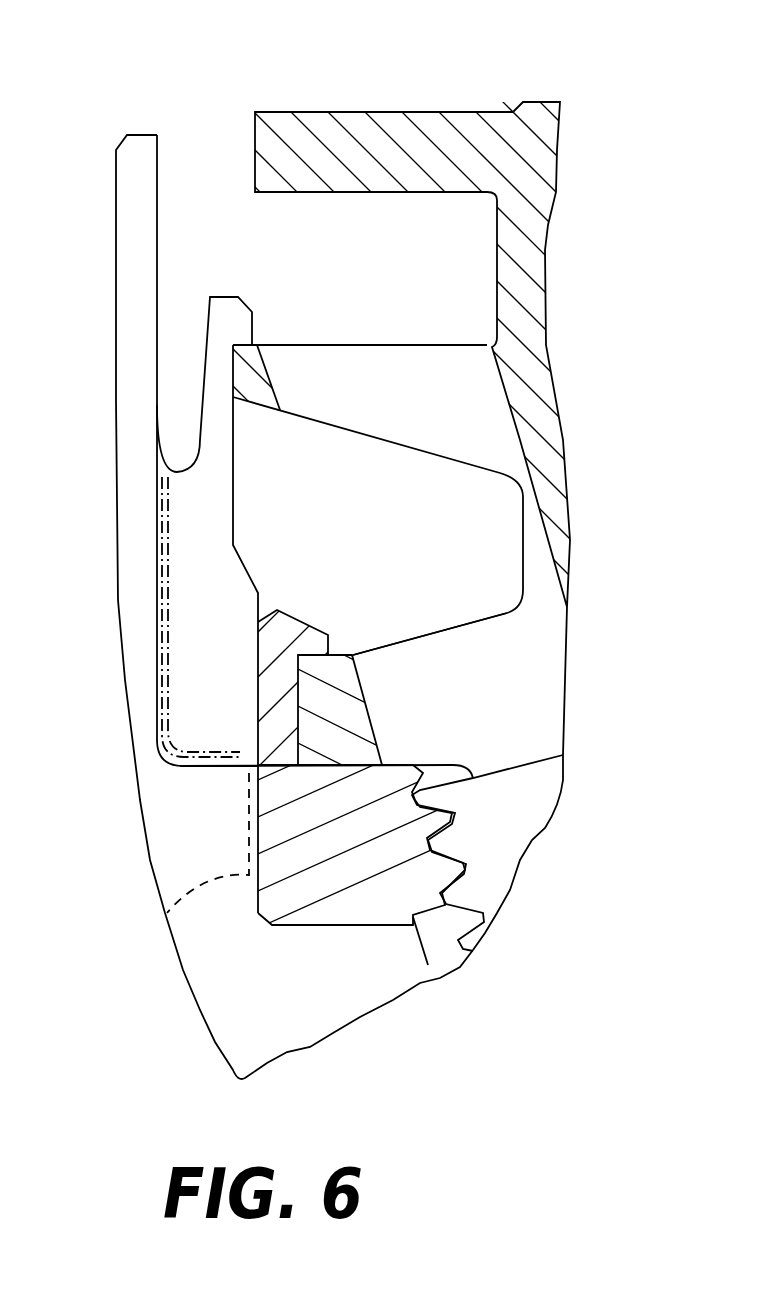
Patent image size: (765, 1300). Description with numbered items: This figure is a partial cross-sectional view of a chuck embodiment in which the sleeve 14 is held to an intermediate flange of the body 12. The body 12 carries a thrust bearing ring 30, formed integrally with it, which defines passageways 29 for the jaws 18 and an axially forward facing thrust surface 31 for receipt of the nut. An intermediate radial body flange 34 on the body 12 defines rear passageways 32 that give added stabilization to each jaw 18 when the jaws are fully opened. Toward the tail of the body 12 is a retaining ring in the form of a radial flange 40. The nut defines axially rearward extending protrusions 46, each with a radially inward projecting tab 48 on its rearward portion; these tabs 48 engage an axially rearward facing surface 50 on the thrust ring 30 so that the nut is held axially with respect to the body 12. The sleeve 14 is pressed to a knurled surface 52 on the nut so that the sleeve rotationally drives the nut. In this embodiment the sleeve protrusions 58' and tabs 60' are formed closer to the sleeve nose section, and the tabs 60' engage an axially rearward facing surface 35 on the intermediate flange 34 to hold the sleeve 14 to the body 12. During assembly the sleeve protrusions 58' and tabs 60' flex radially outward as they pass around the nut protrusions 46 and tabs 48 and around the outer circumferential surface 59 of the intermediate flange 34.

The body 12 is at (542, 102).
The sleeve 14 is at (215, 1043).
The jaws 18 is at (520, 765).
The passageways 29 is at (410, 640).
The thrust bearing ring 30 is at (300, 742).
The thrust surface 31 is at (257, 814).
The rear passageways 32 is at (398, 447).
The intermediate radial body flange 34 is at (273, 383).
The axially rearward facing surface 35 is at (257, 347).
The radial flange 40 is at (358, 112).
The protrusions 46 is at (270, 687).
The tab 48 is at (317, 628).
The axially rearward facing surface 50 is at (342, 657).
The knurled surface 52 is at (160, 912).
The sleeve protrusions 58' is at (152, 450).
The outer circumferential surface 59 is at (232, 362).
The tabs 60' is at (237, 350).